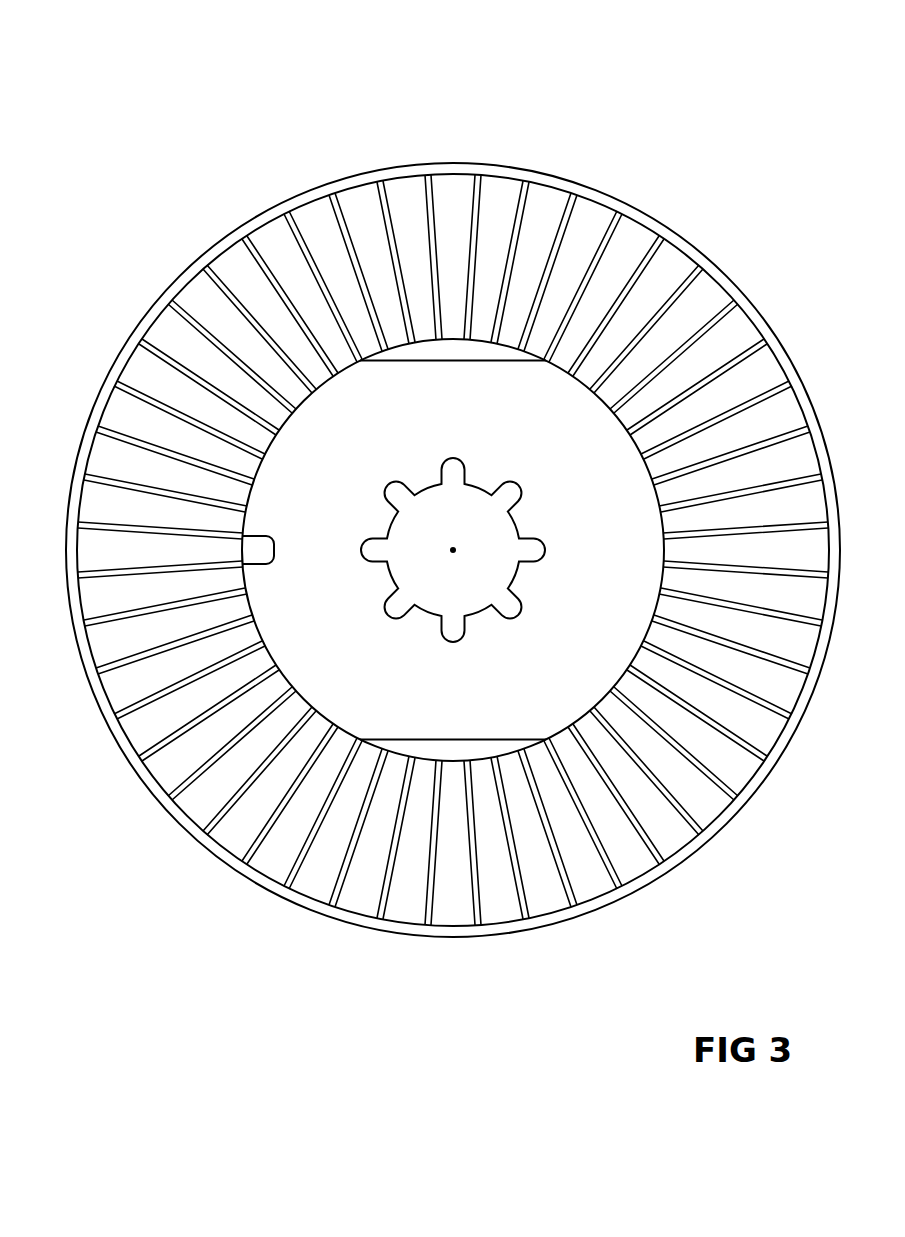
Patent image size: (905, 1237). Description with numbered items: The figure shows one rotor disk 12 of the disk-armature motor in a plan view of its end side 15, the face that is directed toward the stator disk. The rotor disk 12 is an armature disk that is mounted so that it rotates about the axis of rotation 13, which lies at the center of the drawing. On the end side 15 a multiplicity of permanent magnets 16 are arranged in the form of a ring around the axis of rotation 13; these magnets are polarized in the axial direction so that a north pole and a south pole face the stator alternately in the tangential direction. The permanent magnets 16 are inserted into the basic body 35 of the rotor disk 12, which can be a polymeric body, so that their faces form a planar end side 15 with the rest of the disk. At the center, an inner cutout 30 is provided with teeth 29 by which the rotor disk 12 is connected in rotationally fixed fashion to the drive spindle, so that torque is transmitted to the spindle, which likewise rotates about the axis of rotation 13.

The rotor disk 12 is at (453, 521).
The axis of rotation 13 is at (455, 549).
The end side of rotor 15 is at (473, 938).
The permanent magnets 16 is at (448, 188).
The teeth 29 is at (388, 523).
The inner cutout of rotor disk 30 is at (433, 503).
The basic body of rotor disk 35 is at (301, 197).